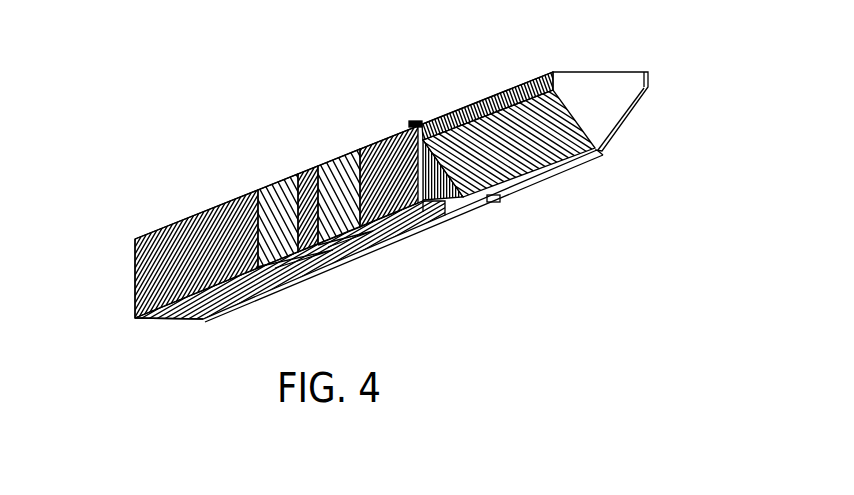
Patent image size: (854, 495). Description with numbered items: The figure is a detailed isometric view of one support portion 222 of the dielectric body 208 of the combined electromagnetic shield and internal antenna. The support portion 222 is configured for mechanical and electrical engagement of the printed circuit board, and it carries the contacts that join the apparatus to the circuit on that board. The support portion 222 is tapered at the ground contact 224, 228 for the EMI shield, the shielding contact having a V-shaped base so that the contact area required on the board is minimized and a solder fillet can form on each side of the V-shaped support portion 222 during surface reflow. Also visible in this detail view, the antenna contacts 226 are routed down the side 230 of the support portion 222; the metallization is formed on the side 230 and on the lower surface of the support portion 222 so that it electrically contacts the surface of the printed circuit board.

The dielectric body 208 is at (210, 217).
The support portion 222 is at (133, 282).
The EMI shield ground contact 224 is at (320, 270).
The antenna contact 226 is at (302, 258).
The ground contact 228 is at (531, 184).
The side of the support portion 230 is at (203, 237).